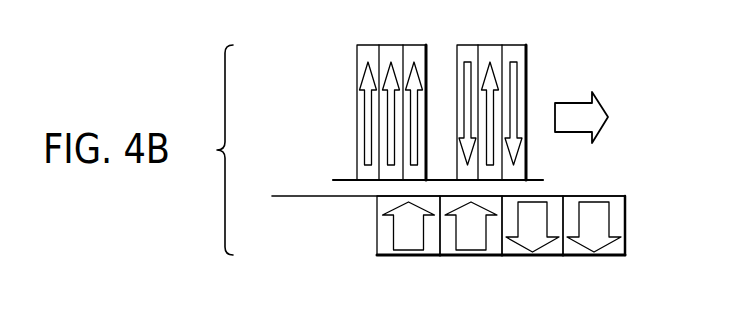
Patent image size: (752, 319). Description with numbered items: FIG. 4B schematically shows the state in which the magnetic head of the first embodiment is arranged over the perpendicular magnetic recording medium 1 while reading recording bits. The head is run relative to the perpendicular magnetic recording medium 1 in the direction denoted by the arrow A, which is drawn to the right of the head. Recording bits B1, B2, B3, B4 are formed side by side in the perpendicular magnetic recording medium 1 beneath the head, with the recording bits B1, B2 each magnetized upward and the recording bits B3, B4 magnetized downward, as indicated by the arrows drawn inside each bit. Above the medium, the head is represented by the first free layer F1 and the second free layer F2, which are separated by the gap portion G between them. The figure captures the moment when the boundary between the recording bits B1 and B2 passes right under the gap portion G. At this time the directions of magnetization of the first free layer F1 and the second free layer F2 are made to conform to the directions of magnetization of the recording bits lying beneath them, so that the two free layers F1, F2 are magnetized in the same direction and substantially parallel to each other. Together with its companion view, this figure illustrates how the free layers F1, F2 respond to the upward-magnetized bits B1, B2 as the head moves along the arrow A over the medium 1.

The perpendicular magnetic recording medium 1 is at (297, 227).
The first free layer F1 is at (388, 50).
The second free layer F2 is at (495, 50).
The gap portion G is at (478, 39).
The arrow A is at (581, 117).
The recording bit B1 is at (407, 256).
The recording bit B2 is at (468, 256).
The recording bit B3 is at (530, 256).
The recording bit B4 is at (592, 256).